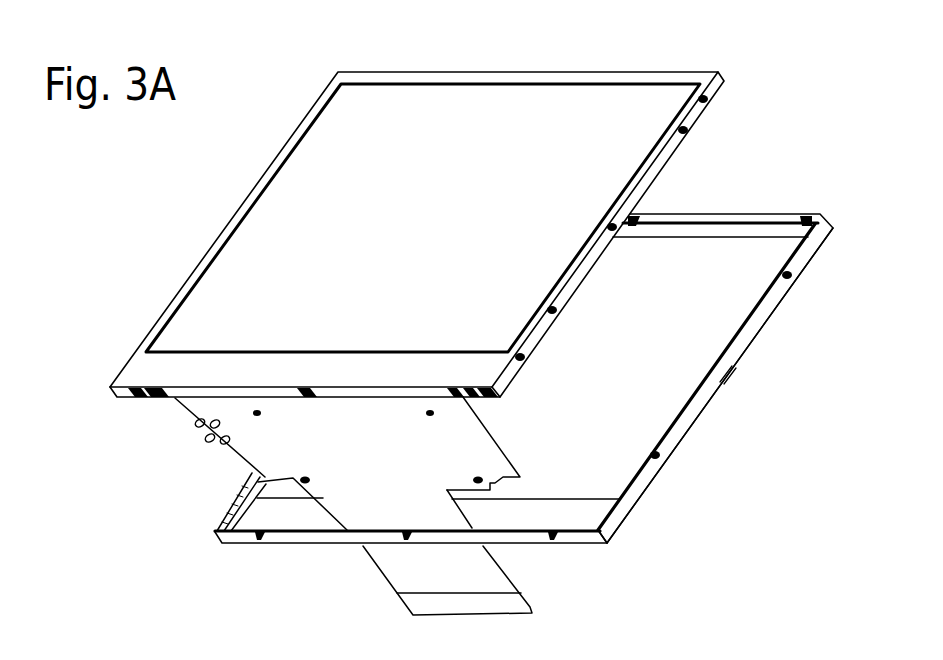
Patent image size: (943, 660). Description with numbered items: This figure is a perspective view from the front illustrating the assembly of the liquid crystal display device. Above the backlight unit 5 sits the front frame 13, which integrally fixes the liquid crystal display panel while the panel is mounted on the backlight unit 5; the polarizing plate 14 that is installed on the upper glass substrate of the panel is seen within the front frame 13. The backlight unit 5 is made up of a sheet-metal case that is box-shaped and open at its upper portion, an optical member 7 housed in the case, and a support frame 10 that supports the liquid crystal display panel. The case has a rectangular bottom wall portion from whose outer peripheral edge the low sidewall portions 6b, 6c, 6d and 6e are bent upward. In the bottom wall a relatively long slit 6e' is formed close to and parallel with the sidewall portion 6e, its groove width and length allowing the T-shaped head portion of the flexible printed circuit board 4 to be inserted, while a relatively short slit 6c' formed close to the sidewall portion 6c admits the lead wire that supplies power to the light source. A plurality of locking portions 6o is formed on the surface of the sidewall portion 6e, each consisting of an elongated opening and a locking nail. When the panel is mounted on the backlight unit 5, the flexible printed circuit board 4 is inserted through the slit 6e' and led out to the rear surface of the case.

The front frame 13 is at (707, 120).
The polarizing plate 14 is at (512, 103).
The backlight unit 5 is at (776, 336).
The sidewall portion 6d is at (717, 212).
The support frame 10 is at (752, 230).
The optical member 7 is at (753, 266).
The sidewall portion 6b is at (687, 418).
The sidewall portion 6e is at (417, 540).
The slit 6e' is at (630, 521).
The sidewall portion 6c is at (211, 492).
The slit 6c' is at (214, 511).
The flexible printed circuit board 4 is at (388, 590).
The locking portion 6o is at (264, 540).